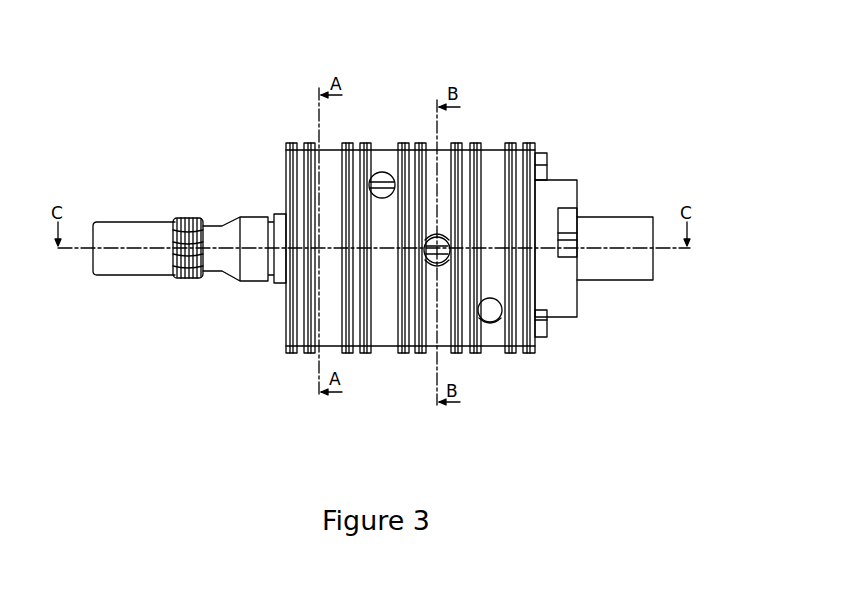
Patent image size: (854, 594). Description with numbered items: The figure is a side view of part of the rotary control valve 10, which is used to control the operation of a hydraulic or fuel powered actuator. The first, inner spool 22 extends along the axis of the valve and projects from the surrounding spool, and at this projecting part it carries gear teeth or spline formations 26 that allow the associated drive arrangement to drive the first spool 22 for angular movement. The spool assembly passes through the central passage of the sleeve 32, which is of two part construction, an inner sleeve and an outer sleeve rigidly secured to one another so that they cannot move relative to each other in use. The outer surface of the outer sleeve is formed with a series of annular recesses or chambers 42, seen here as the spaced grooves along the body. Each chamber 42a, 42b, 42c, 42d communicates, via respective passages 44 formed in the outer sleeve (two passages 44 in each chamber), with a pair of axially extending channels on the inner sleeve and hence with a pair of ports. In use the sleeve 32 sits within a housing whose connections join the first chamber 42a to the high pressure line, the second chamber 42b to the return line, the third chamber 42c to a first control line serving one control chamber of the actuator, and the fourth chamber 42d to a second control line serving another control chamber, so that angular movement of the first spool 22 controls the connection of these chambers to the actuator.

The rotary control valve 10 is at (547, 131).
The first, inner spool 22 is at (128, 287).
The gear teeth or spline formations 26 is at (186, 210).
The sleeve 32 is at (518, 354).
The annular recesses or chambers 42 is at (432, 342).
The first chamber 42a is at (443, 352).
The second chamber 42b is at (320, 352).
The third chamber 42c is at (492, 165).
The fourth chamber 42d is at (377, 335).
The passages 44 is at (434, 228).